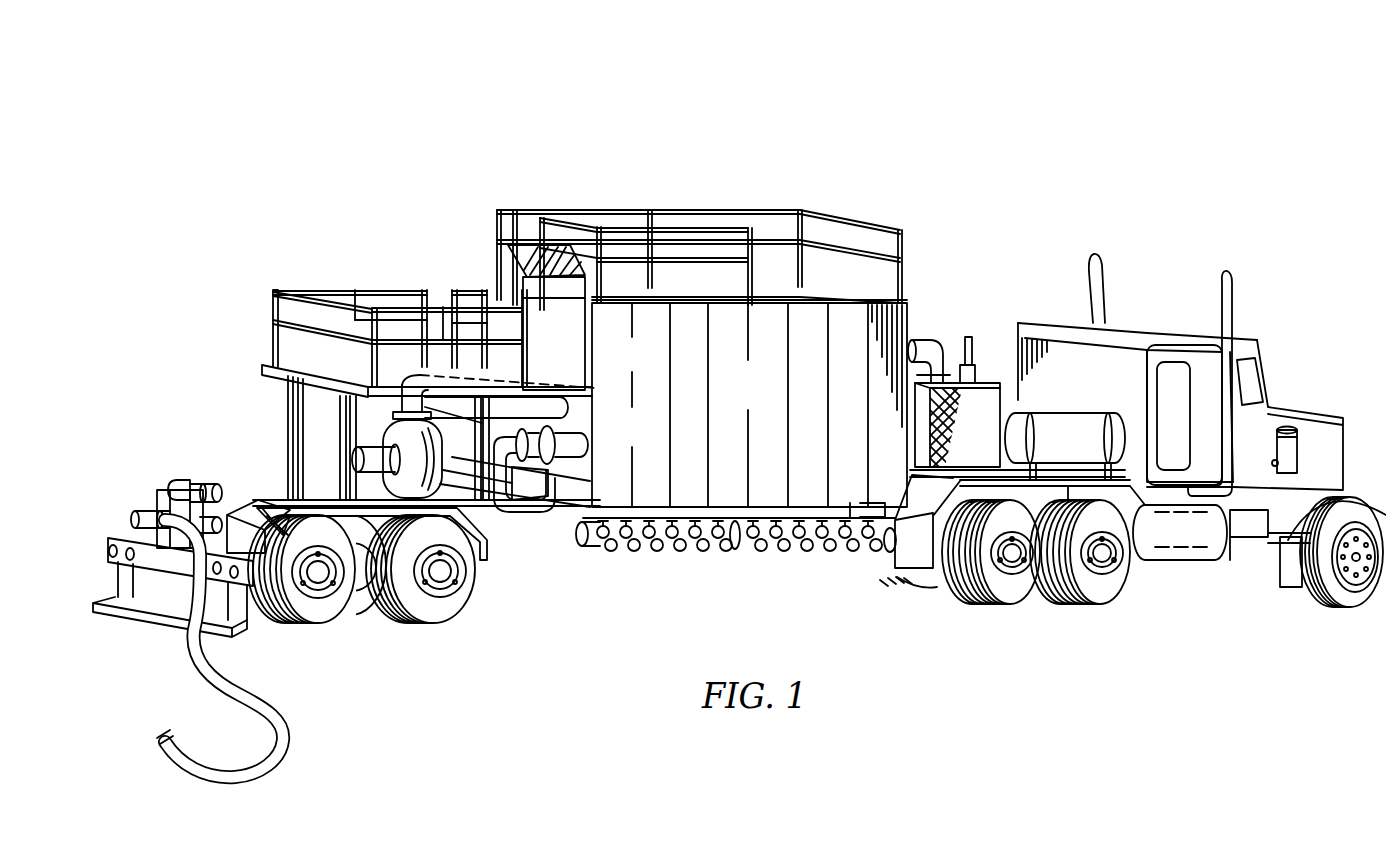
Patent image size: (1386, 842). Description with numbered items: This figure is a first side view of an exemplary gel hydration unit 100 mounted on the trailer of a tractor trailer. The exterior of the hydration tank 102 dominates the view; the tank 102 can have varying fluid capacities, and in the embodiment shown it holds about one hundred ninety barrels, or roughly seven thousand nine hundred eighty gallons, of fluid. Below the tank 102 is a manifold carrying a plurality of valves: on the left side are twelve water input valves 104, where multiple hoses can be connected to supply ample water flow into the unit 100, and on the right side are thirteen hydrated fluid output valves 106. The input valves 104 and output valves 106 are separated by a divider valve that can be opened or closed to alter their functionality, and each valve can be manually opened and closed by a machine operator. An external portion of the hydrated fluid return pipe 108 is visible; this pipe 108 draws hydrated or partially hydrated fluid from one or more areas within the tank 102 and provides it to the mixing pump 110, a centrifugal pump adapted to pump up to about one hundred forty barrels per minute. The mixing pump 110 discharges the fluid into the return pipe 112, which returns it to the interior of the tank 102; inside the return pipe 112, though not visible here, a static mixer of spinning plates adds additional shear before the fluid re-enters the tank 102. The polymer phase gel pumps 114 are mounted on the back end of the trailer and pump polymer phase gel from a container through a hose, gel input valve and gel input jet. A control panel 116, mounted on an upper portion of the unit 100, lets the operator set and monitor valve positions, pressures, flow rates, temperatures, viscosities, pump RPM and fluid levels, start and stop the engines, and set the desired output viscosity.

The gel hydration unit 100 is at (450, 96).
The hydration tank 102 is at (770, 400).
The water input valves 104 is at (727, 566).
The hydrated fluid output valves 106 is at (890, 566).
The hydrated fluid return pipe 108 is at (537, 478).
The mixing pump 110 is at (385, 452).
The return pipe 112 is at (558, 404).
The polymer phase gel pumps 114 is at (180, 468).
The control panel 116 is at (568, 357).